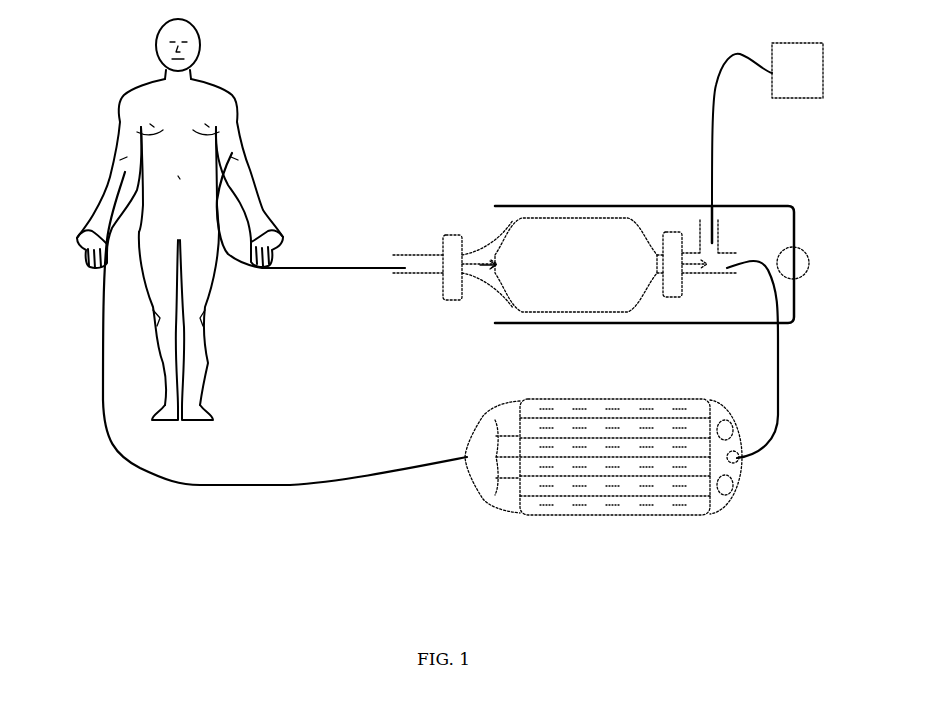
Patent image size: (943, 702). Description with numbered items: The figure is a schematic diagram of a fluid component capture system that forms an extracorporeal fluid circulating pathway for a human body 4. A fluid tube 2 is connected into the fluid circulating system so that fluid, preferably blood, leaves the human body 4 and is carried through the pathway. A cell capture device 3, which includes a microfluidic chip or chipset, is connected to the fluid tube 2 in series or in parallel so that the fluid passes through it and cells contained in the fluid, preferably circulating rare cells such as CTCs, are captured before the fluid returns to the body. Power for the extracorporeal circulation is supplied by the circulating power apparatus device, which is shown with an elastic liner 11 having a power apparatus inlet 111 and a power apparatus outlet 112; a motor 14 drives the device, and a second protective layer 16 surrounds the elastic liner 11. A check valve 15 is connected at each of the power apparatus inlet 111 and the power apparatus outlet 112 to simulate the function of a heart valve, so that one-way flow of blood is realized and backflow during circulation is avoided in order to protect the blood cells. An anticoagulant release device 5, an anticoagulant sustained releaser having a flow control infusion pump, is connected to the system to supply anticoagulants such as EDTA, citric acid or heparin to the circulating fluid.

The fluid tube 2 is at (358, 268).
The cell capture device 3 is at (655, 507).
The human body 4 is at (155, 100).
The anticoagulant release device 5 is at (803, 77).
The elastic liner 11 is at (550, 217).
The motor 14 is at (798, 267).
The check valve 15 is at (452, 248).
The second protective layer 16 is at (750, 201).
The power apparatus inlet 111 is at (483, 273).
The power apparatus outlet 112 is at (655, 258).